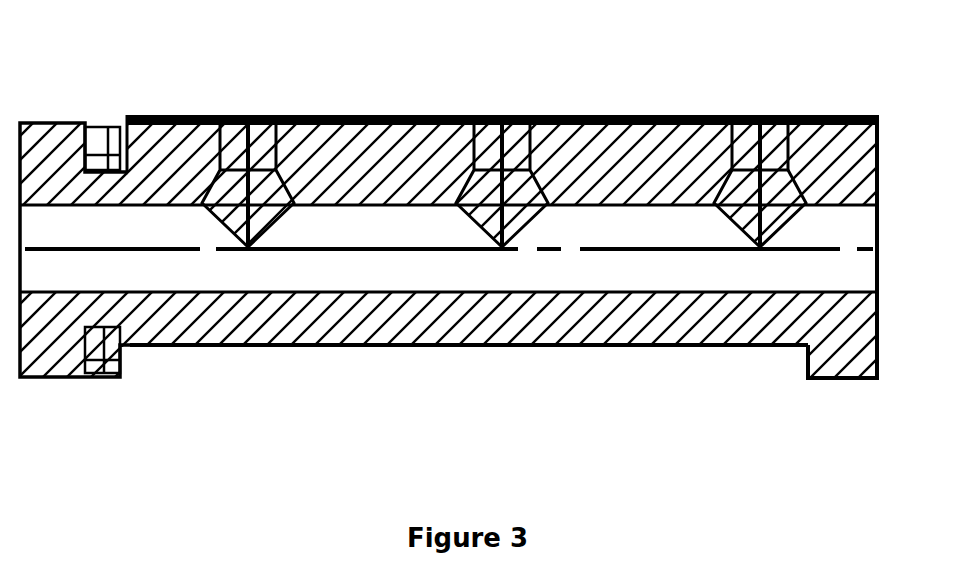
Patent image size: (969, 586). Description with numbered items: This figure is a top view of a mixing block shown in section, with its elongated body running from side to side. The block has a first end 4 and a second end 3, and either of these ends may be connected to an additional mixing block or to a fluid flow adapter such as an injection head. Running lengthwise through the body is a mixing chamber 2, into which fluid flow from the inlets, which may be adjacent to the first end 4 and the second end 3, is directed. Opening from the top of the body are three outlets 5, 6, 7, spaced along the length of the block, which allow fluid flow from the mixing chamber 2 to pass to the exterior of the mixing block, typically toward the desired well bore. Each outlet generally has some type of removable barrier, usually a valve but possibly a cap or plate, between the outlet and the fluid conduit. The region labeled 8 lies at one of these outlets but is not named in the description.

The mixing chamber 2 is at (428, 277).
The second end 3 is at (23, 347).
The first end 4 is at (845, 357).
The outlet 5 is at (265, 138).
The outlet 6 is at (515, 143).
The outlet 7 is at (767, 145).
The nozzle distribution chamber 8 is at (802, 188).